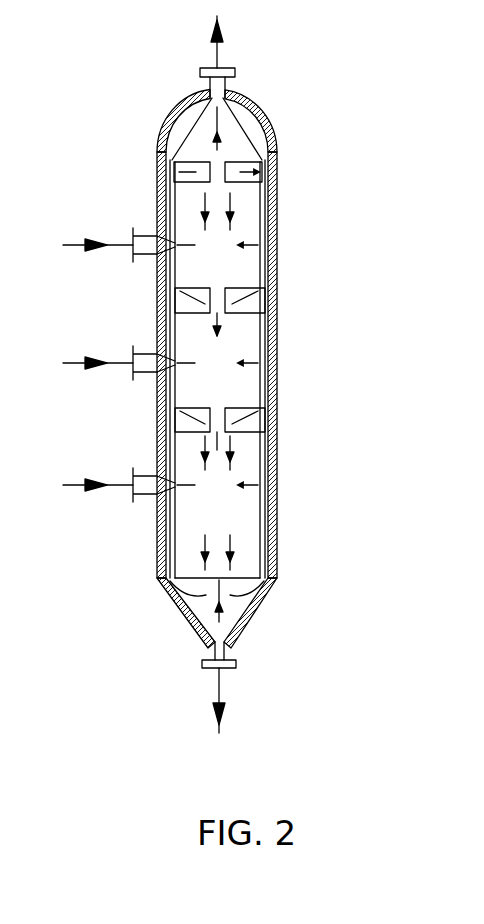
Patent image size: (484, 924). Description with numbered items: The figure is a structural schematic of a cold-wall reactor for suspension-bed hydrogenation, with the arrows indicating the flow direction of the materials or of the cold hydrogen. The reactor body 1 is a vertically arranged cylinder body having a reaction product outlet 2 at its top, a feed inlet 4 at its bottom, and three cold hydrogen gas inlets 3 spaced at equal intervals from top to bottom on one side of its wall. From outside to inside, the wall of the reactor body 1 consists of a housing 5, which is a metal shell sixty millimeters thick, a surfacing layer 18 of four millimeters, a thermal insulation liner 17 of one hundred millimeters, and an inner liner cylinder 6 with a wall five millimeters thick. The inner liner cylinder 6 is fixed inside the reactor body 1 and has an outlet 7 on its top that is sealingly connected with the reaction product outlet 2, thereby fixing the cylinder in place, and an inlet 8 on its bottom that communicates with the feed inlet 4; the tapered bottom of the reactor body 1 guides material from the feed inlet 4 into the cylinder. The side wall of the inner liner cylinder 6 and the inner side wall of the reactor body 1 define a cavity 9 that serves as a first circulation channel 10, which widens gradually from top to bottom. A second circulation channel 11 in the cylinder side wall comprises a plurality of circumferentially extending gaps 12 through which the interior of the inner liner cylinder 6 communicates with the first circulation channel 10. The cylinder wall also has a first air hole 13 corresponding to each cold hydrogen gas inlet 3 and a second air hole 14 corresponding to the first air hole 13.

The reactor body 1 is at (265, 112).
The reaction product outlet 2 is at (230, 66).
The cold hydrogen gas inlet 3 is at (132, 472).
The feed inlet 4 is at (228, 668).
The housing 5 is at (165, 314).
The inner liner cylinder 6 is at (157, 572).
The outlet 7 is at (207, 92).
The inlet 8 is at (268, 608).
The cavity 9 is at (277, 195).
The first circulation channel 10 is at (277, 337).
The second circulation channel 11 is at (245, 292).
The gap 12 is at (172, 168).
The first air hole 13 is at (160, 502).
The second air hole 14 is at (270, 479).
The thermal insulation liner 17 is at (274, 160).
The surfacing layer 18 is at (277, 526).